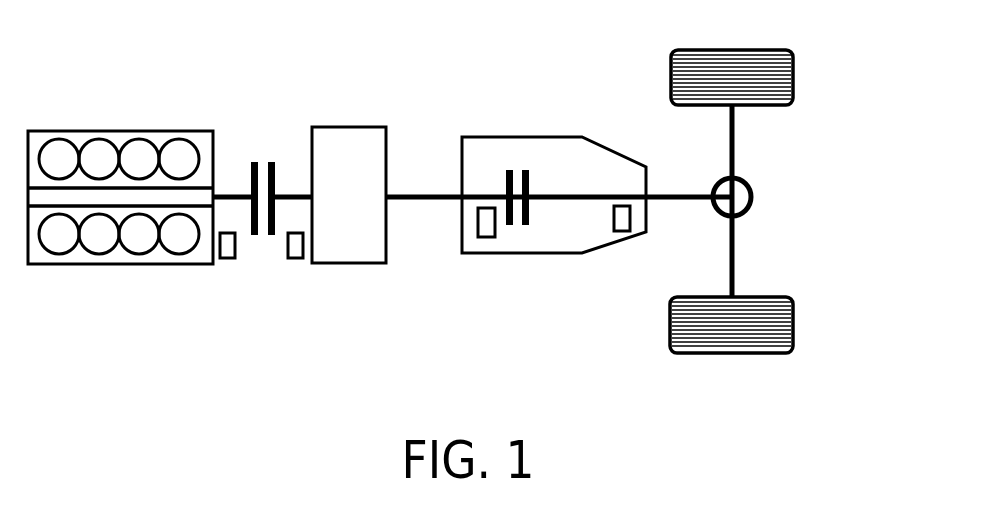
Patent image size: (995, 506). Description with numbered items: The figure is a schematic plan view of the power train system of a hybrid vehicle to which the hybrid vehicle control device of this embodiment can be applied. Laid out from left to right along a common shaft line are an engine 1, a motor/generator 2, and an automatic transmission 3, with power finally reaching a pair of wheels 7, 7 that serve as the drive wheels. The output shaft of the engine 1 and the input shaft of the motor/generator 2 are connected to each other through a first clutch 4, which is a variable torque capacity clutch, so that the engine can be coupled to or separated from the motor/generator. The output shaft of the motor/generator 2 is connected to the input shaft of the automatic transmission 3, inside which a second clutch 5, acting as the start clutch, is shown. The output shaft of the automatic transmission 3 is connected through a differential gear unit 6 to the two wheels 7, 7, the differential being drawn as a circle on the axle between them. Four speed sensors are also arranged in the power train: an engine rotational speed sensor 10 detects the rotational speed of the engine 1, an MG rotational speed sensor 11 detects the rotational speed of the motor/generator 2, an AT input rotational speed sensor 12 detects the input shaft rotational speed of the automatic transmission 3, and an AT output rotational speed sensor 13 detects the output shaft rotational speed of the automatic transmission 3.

The engine 1 is at (76, 127).
The motor/generator 2 is at (352, 122).
The automatic transmission 3 is at (528, 133).
The first clutch 4 is at (258, 145).
The second clutch 5 is at (512, 163).
The differential gear unit 6 is at (757, 189).
The wheels 7 is at (795, 78).
The engine rotational speed sensor 10 is at (229, 267).
The MG rotational speed sensor 11 is at (296, 267).
The AT input rotational speed sensor 12 is at (486, 242).
The AT output rotational speed sensor 13 is at (620, 238).